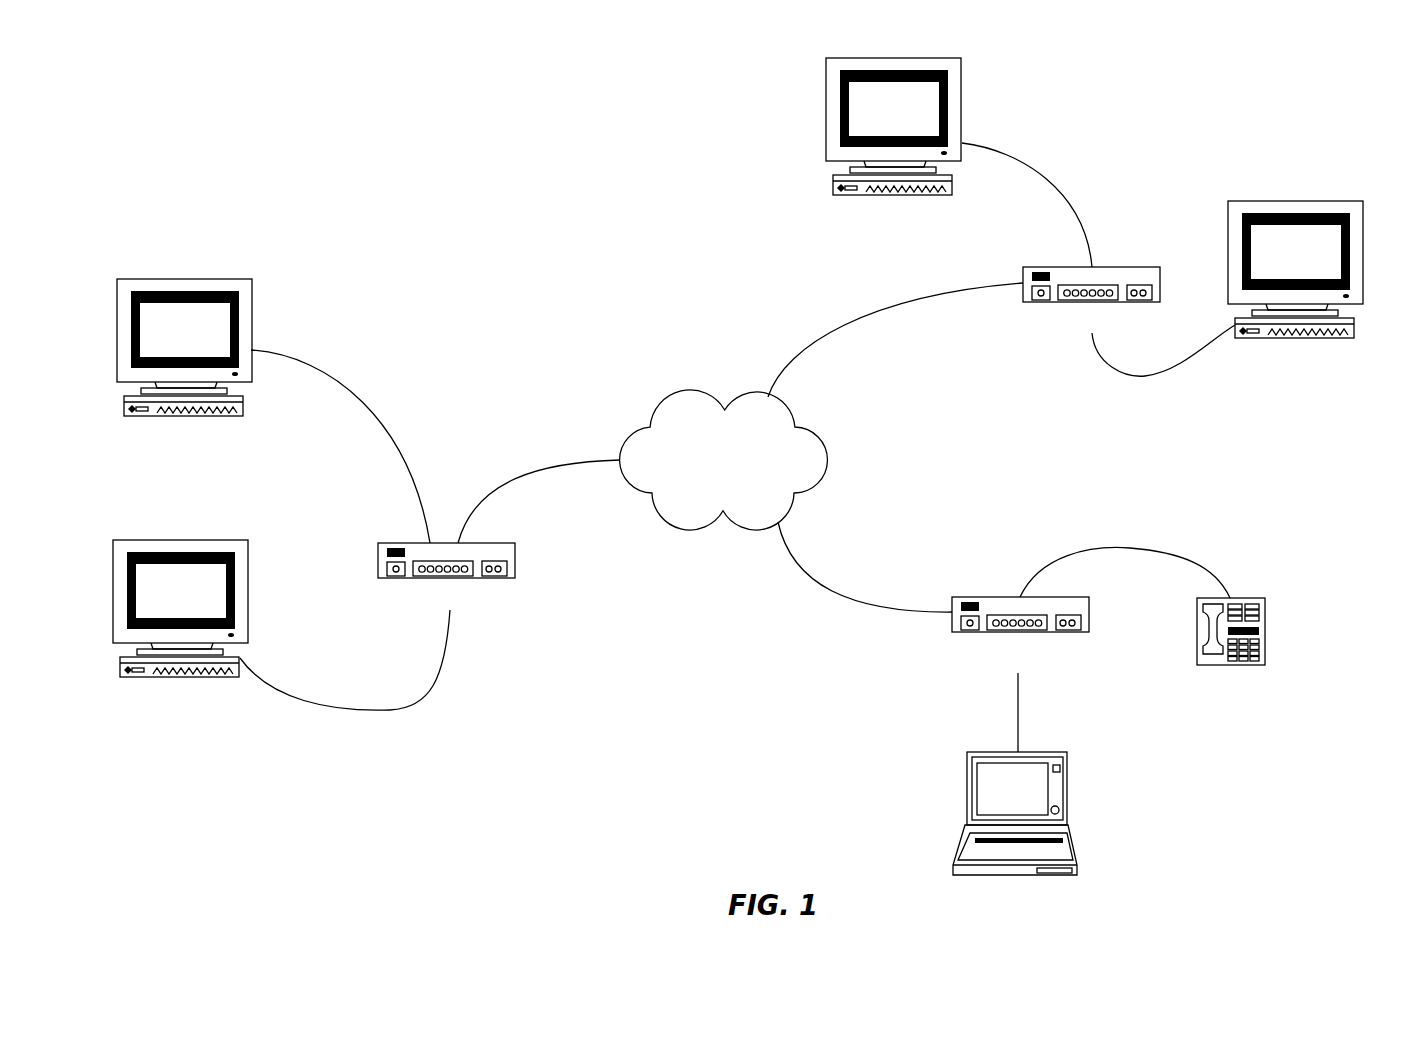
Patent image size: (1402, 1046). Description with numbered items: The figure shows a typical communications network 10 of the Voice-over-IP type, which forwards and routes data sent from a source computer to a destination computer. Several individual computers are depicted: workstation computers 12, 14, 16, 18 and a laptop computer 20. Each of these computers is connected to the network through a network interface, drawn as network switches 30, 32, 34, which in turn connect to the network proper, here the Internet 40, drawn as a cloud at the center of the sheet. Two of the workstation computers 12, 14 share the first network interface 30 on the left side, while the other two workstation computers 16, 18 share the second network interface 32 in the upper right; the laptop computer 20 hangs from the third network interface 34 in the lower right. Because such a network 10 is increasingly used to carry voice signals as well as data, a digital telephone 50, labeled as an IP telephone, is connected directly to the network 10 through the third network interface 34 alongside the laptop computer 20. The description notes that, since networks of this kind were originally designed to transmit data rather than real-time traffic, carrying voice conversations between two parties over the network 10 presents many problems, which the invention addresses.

The communications network 10 is at (437, 130).
The individual computer 12 is at (225, 279).
The individual computer 14 is at (212, 540).
The individual computer 16 is at (962, 90).
The individual computer 18 is at (1305, 201).
The individual computer 20 is at (1045, 752).
The network interface 30 is at (497, 543).
The network interface 32 is at (1108, 267).
The network interface 34 is at (993, 597).
The Internet 40 is at (792, 413).
The digital telephone 50 is at (1248, 598).